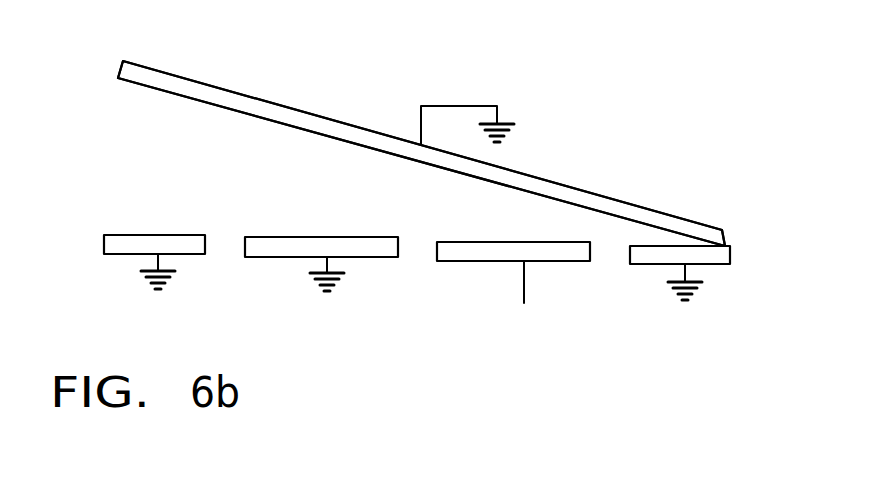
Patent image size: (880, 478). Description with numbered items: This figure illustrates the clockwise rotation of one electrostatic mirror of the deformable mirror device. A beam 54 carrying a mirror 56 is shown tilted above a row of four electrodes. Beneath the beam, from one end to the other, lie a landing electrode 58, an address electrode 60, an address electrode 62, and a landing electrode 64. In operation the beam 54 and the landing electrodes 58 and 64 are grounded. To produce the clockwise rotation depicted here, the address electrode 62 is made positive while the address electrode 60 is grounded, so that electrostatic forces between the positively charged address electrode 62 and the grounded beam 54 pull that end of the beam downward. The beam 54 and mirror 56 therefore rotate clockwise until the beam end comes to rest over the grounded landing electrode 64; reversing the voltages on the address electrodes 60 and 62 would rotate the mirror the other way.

The beam 54 is at (120, 63).
The mirror 56 is at (268, 100).
The landing electrode 58 is at (137, 243).
The address electrode 60 is at (305, 248).
The address electrode 62 is at (503, 250).
The landing electrode 64 is at (655, 257).